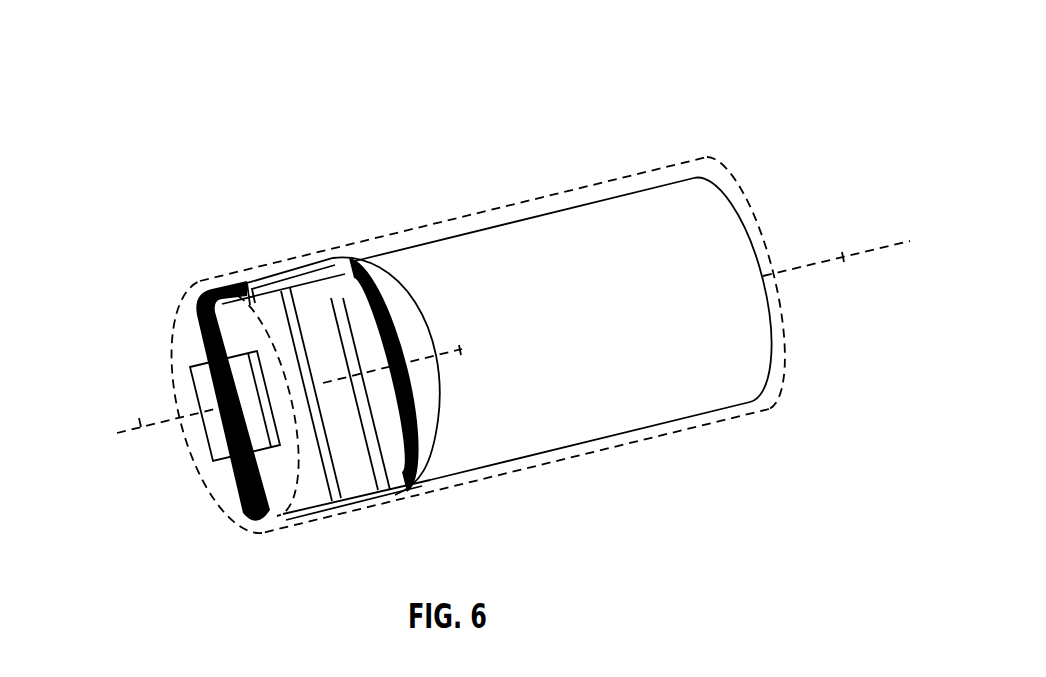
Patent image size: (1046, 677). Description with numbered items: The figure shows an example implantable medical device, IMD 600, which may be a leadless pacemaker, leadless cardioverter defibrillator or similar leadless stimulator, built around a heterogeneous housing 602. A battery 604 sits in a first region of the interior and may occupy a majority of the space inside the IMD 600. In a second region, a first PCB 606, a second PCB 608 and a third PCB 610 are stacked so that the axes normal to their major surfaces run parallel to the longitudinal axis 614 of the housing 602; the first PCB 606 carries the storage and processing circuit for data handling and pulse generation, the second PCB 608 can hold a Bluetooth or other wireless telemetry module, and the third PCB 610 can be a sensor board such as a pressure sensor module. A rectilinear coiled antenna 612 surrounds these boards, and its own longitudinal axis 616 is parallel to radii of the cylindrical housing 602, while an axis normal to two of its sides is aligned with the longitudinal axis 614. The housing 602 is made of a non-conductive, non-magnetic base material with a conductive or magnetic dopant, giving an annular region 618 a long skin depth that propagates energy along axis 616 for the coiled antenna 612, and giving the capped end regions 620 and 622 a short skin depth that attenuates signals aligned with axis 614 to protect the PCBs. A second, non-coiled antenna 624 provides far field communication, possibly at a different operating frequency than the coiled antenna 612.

The IMD 600 is at (654, 73).
The housing 602 is at (639, 437).
The battery 604 is at (620, 217).
The first PCB 606 is at (290, 280).
The second PCB 608 is at (238, 518).
The third PCB 610 is at (217, 440).
The coiled antenna 612 is at (380, 280).
The longitudinal axis 614 is at (140, 422).
The longitudinal axis of antenna 616 is at (462, 353).
The annular region 618 is at (540, 197).
The capped end region 620 is at (187, 347).
The capped end region 622 is at (753, 203).
The non-coiled antenna 624 is at (323, 313).